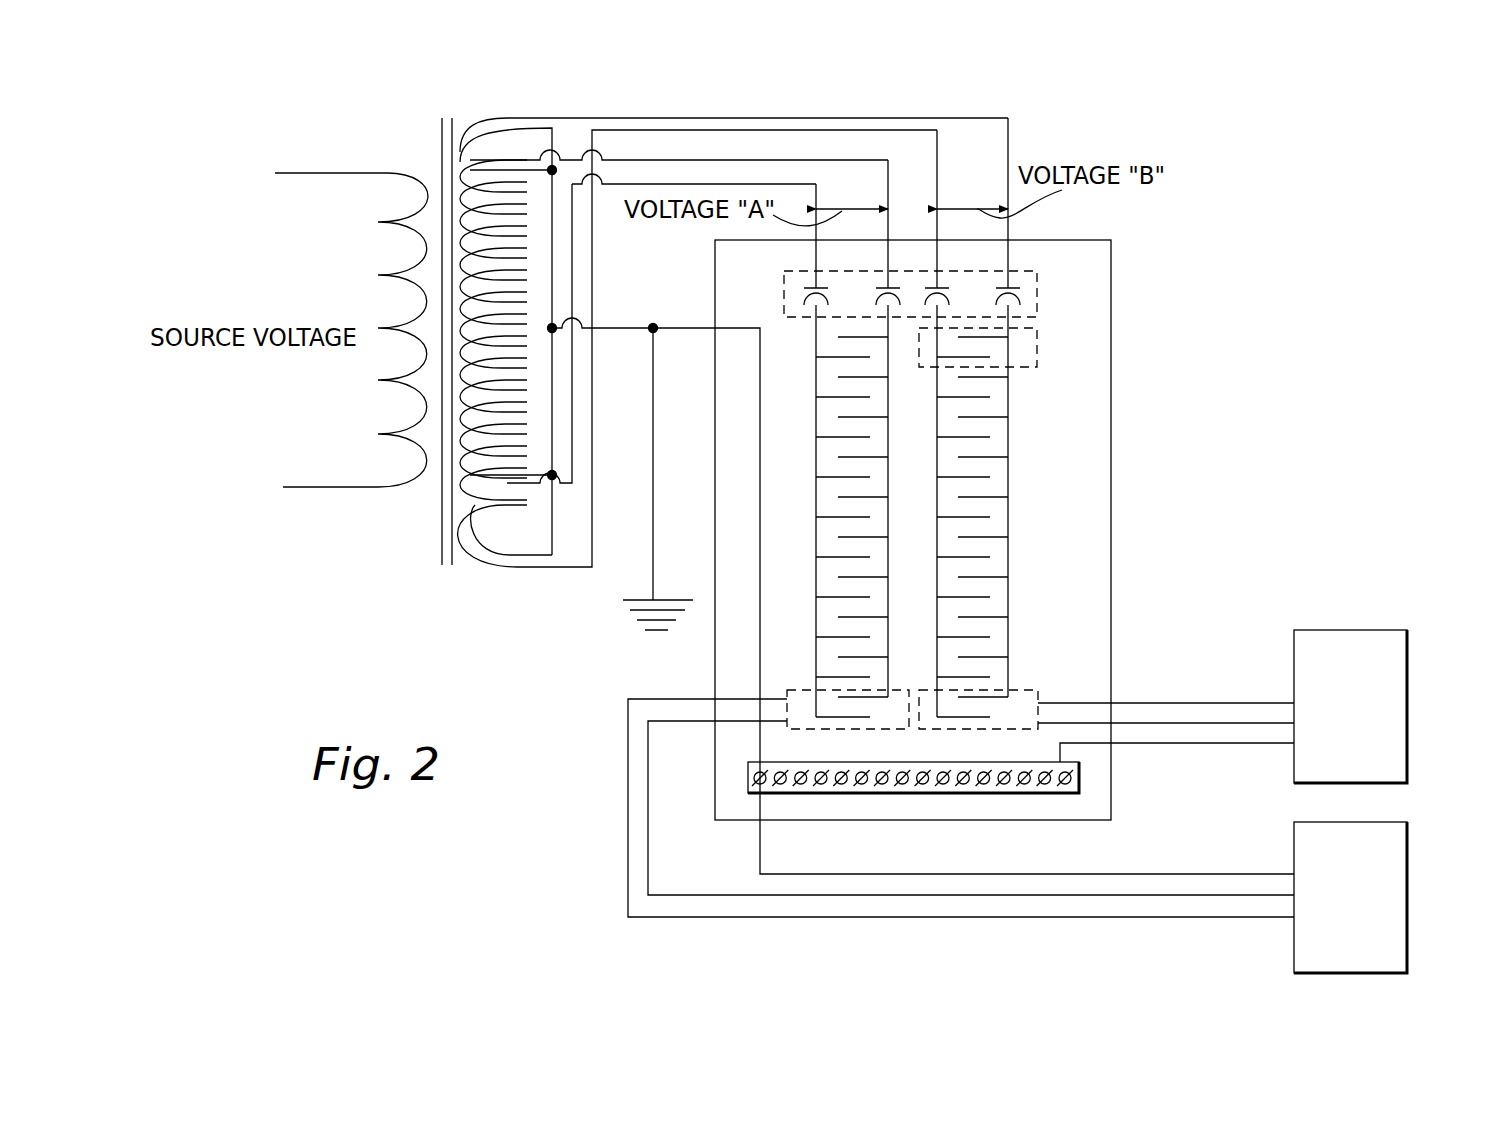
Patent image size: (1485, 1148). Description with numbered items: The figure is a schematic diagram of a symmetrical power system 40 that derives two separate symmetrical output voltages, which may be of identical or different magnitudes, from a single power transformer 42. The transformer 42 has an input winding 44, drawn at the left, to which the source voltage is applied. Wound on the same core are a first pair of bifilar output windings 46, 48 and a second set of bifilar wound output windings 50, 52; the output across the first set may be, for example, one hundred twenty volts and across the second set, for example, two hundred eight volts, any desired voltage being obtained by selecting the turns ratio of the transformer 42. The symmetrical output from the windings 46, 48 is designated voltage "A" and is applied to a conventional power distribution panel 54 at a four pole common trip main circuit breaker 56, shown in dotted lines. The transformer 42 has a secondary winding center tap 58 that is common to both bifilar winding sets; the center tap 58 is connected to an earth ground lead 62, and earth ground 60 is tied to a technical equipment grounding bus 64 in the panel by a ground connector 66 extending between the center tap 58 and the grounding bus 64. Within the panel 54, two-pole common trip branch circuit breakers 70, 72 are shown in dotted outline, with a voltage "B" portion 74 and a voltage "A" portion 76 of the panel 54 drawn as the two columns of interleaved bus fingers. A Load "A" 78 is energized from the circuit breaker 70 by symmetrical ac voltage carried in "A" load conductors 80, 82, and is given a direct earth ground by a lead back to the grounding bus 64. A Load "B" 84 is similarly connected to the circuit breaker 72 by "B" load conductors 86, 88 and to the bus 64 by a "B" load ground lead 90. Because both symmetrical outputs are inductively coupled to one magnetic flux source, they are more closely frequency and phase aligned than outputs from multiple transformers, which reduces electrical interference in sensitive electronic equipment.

The symmetrical power system 40 is at (1140, 220).
The power transformer 42 is at (432, 136).
The input winding 44 is at (383, 329).
The first bifilar output winding 46 is at (470, 485).
The first bifilar output winding 48 is at (478, 500).
The second bifilar output winding 50 is at (505, 567).
The second bifilar output winding 52 is at (478, 550).
The power distribution panel 54 is at (1122, 402).
The four pole common trip main circuit breaker 56 is at (1040, 290).
The secondary winding center tap 58 is at (653, 322).
The earth ground 60 is at (625, 597).
The earth ground lead 62 is at (650, 568).
The technical equipment grounding bus 64 is at (1080, 775).
The ground connector 66 is at (1038, 353).
The 2-pole common trip branch circuit breaker 70 is at (789, 728).
The 2-pole common trip branch circuit breaker 72 is at (1038, 690).
The voltage 'B' portion 74 is at (1010, 562).
The voltage 'A' portion 76 is at (817, 614).
The Load 'A' 78 is at (1408, 873).
The 'A' load conductor 80 is at (628, 794).
The 'A' load conductor 82 is at (648, 828).
The Load 'B' 84 is at (1408, 688).
The 'B' load conductor 86 is at (1144, 703).
The 'B' load conductor 88 is at (1196, 723).
The 'B' load ground lead 90 is at (1215, 745).